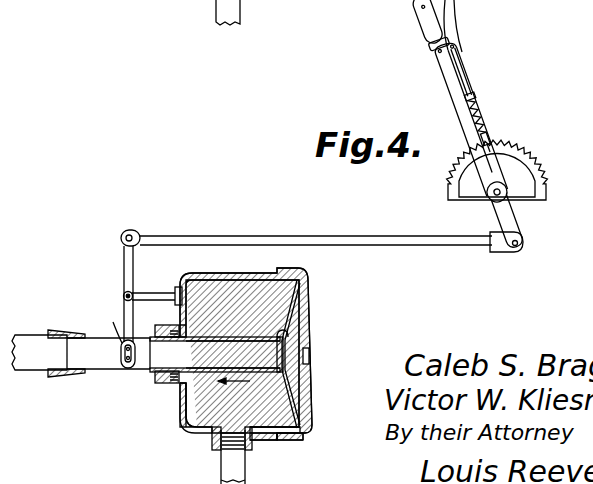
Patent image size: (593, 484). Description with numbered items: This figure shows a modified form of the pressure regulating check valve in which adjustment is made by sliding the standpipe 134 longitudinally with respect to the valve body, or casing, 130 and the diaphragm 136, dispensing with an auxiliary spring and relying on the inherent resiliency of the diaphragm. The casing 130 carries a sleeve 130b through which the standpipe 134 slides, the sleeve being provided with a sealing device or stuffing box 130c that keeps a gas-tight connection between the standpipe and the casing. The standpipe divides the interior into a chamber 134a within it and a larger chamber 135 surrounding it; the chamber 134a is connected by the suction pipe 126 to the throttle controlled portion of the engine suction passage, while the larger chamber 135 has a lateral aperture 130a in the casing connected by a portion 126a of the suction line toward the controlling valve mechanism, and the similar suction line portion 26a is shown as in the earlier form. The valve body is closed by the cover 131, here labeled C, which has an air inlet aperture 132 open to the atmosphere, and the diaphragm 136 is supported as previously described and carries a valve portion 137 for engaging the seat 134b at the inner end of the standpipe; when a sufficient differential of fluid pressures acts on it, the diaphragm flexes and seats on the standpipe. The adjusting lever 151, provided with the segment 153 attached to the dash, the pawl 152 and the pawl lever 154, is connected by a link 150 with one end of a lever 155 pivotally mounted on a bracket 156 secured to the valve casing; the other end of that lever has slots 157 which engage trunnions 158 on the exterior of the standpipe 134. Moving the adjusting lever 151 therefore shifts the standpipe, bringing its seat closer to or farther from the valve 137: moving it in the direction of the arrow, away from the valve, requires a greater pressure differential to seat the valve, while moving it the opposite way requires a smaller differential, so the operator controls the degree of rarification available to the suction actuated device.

The portion of the suction line 26a is at (240, 10).
The suction pipe 126 is at (28, 335).
The portion of the suction line 126a is at (246, 470).
The valve body or casing 130 is at (226, 275).
The lateral aperture 130a is at (224, 446).
The sleeve 130b is at (176, 384).
The sealing device or stuffing box 130c is at (181, 390).
The cover 131 is at (307, 311).
The air inlet aperture 132 is at (312, 356).
The standpipe 134 is at (222, 338).
The chamber within the standpipe 134a is at (233, 354).
The seat 134b is at (283, 335).
The larger chamber 135 is at (212, 404).
The diaphragm 136 is at (291, 303).
The valve portion 137 is at (286, 373).
The cap C is at (323, 274).
The link 150 is at (345, 236).
The adjusting lever 151 is at (471, 127).
The pawl 152 is at (496, 137).
The segment 153 is at (534, 166).
The pawl lever 154 is at (450, 24).
The lever 155 is at (124, 256).
The bracket 156 is at (143, 295).
The slots 157 is at (107, 325).
The trunnions 158 is at (127, 367).